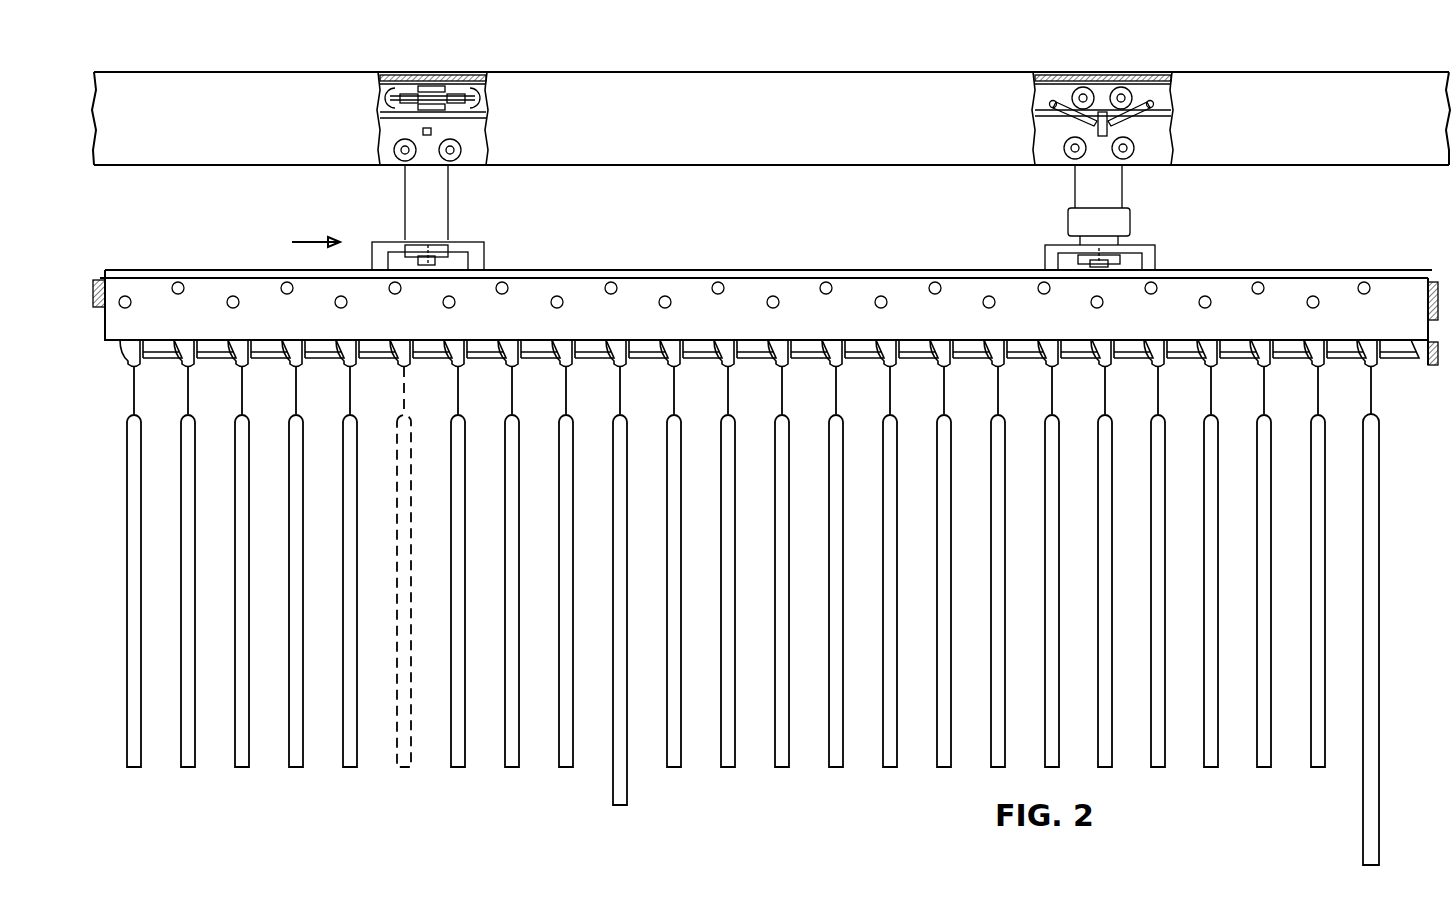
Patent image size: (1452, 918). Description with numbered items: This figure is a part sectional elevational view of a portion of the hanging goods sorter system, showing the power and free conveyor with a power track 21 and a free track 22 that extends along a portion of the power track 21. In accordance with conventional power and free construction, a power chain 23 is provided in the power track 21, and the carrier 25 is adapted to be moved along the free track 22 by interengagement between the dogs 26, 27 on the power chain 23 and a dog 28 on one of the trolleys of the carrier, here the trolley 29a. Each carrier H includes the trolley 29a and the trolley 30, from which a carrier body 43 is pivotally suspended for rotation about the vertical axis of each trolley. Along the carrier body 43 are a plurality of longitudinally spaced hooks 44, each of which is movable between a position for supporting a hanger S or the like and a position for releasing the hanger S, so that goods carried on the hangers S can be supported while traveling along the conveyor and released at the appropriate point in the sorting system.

The power track 21 is at (467, 78).
The free track 22 is at (1165, 163).
The power chain 23 is at (1122, 90).
The carrier 25 is at (1163, 240).
The dog 26 is at (1055, 113).
The dog 27 is at (1130, 120).
The dog 28 is at (1101, 152).
The trolley 29a is at (1070, 222).
The trolley 30 is at (448, 208).
The carrier body 43 is at (912, 262).
The hook 44 is at (900, 385).
The carrier H is at (773, 262).
The hanger S is at (738, 380).